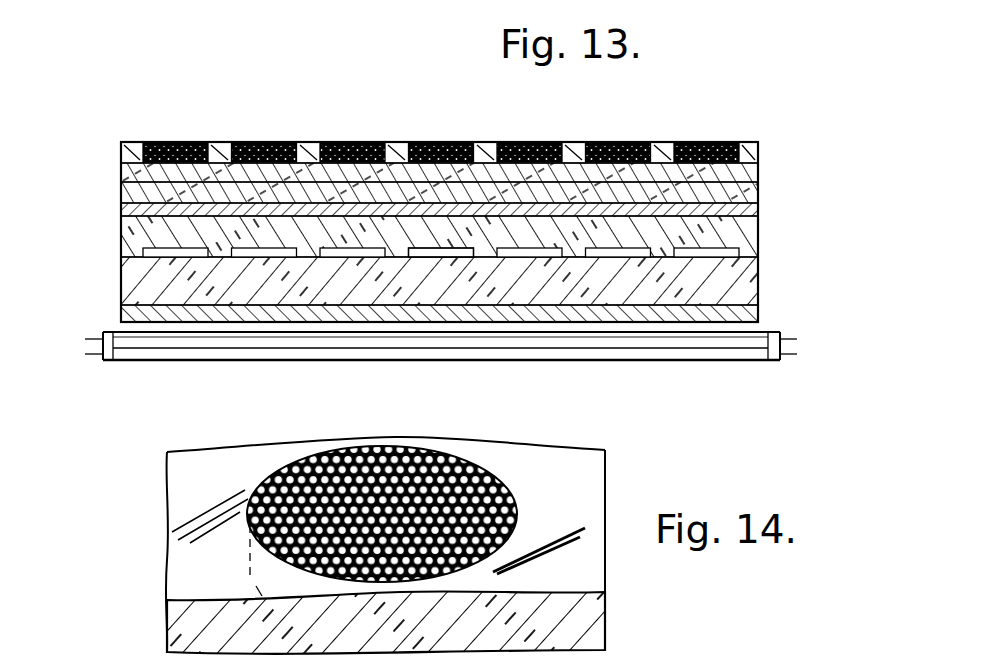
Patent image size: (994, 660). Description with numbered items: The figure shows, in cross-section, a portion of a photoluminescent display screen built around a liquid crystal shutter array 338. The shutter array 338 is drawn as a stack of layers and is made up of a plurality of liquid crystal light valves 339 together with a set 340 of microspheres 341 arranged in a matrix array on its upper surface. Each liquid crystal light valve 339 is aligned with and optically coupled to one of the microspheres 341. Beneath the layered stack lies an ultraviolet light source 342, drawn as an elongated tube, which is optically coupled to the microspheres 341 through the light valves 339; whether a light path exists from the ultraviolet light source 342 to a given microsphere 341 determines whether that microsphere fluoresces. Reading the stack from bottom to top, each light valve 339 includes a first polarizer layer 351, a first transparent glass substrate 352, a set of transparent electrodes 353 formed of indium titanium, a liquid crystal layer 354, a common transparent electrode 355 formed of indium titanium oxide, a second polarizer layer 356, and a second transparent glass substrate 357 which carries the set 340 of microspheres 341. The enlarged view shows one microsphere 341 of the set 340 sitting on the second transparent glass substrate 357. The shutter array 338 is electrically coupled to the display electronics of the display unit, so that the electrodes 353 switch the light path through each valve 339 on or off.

In FIG. 13, the liquid crystal shutter array 338 is at (772, 254).
In FIG. 13, the liquid crystal light valve 339 is at (436, 232).
In FIG. 13, the set of microspheres 340 is at (397, 145).
In FIG. 14, the set of microspheres 340 is at (530, 487).
In FIG. 13, the microsphere 341 is at (165, 152).
In FIG. 14, the microsphere 341 is at (452, 453).
In FIG. 13, the ultraviolet light source 342 is at (762, 358).
In FIG. 13, the first polarizer layer 351 is at (752, 308).
In FIG. 13, the first transparent glass substrate 352 is at (134, 275).
In FIG. 13, the set of transparent electrodes 353 is at (305, 243).
In FIG. 13, the liquid crystal layer 354 is at (140, 228).
In FIG. 13, the common transparent electrode 355 is at (257, 196).
In FIG. 13, the second polarizer layer 356 is at (146, 150).
In FIG. 13, the second transparent glass substrate 357 is at (752, 170).
In FIG. 14, the second transparent glass substrate 357 is at (180, 622).